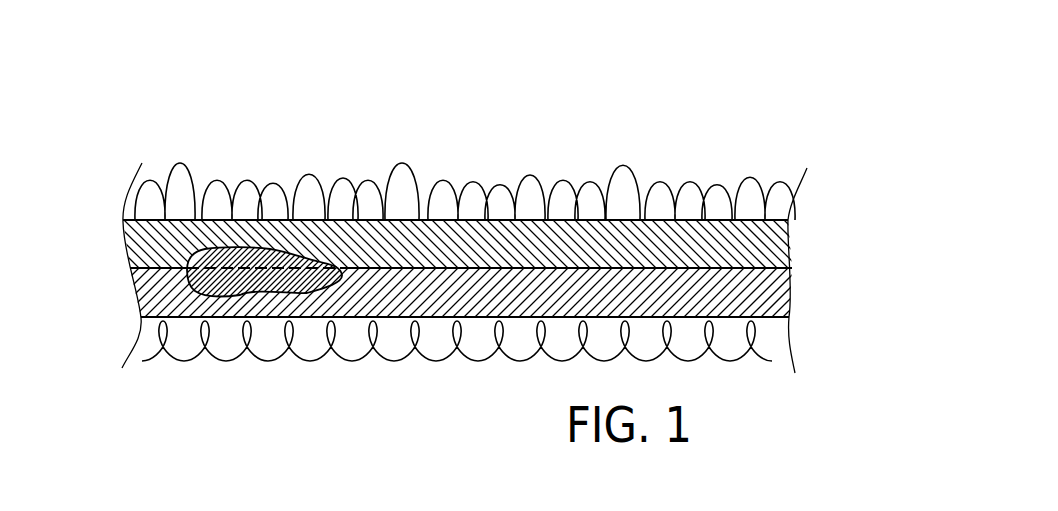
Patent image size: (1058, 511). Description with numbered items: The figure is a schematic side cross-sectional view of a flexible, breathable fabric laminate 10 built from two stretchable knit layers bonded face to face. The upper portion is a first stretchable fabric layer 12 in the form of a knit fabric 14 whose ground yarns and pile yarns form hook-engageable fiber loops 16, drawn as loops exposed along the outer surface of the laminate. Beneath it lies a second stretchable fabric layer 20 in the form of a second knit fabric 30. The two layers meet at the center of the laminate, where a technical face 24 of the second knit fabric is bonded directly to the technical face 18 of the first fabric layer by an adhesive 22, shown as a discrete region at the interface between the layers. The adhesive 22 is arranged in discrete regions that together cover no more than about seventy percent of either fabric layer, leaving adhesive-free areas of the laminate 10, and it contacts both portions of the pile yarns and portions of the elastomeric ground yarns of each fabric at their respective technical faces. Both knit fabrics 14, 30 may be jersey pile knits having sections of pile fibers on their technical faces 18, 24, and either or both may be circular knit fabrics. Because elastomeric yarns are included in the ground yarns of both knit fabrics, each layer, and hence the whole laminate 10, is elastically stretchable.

The fabric laminate 10 is at (722, 137).
The first stretchable fabric layer 12 is at (105, 218).
The knit fabric 14 is at (780, 237).
The hook-engageable fiber loops 16 is at (306, 176).
The technical face 18 is at (403, 268).
The second stretchable fabric layer 20 is at (105, 269).
The adhesive 22 is at (233, 293).
The technical face 24 is at (476, 267).
The second knit fabric 30 is at (768, 292).